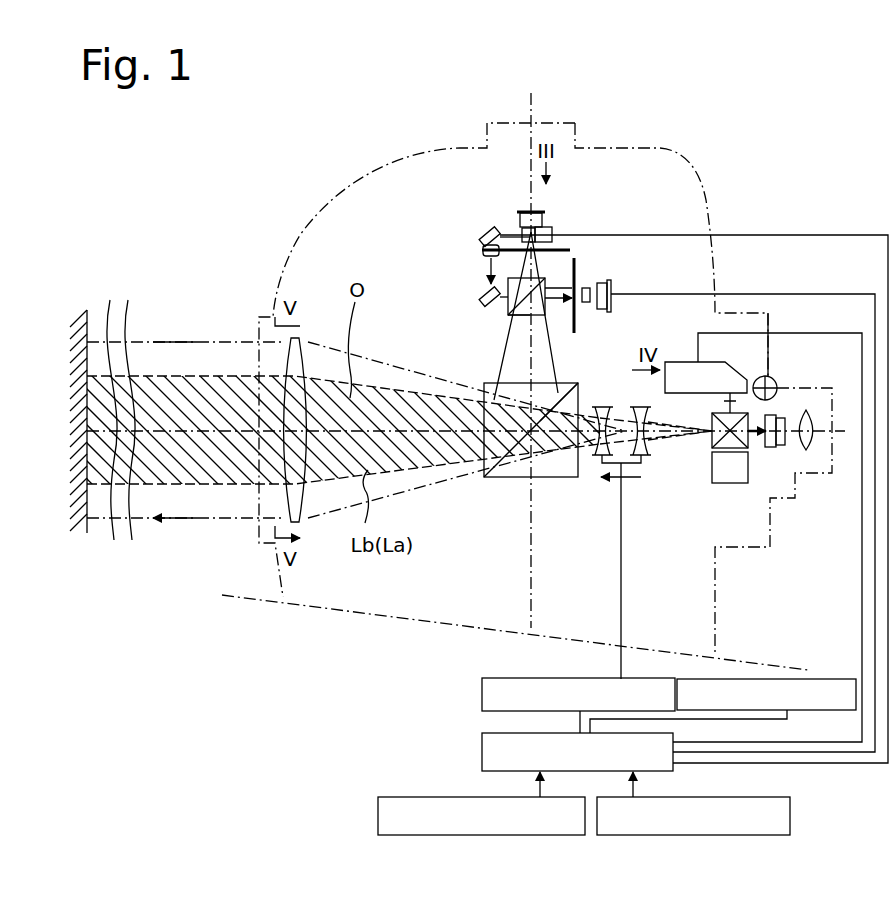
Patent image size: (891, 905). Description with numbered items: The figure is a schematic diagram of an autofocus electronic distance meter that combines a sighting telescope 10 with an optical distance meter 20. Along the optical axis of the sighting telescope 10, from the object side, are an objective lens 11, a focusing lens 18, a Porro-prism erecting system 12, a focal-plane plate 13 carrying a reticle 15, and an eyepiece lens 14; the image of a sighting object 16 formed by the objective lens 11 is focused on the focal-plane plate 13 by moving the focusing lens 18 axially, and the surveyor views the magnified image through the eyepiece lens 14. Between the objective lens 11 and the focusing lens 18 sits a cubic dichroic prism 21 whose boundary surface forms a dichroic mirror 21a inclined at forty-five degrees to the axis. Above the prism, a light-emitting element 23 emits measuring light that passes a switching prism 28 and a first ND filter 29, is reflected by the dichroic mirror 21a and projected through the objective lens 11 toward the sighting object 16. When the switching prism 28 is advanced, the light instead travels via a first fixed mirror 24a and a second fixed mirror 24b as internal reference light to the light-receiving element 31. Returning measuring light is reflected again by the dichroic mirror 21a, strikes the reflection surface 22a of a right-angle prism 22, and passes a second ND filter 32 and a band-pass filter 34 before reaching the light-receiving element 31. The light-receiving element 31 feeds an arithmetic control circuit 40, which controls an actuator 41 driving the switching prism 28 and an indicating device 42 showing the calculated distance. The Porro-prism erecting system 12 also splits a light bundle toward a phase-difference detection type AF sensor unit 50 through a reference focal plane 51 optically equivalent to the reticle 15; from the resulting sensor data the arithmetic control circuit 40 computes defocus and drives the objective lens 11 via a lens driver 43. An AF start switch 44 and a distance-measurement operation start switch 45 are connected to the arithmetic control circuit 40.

The sighting telescope 10 is at (290, 78).
The objective lens 11 is at (307, 340).
The Porro-prism erecting system 12 is at (765, 375).
The focal-plane plate 13 is at (776, 414).
The eyepiece lens 14 is at (806, 410).
The reticle 15 is at (768, 350).
The sighting object 16 is at (90, 312).
The focusing lens 18 is at (600, 406).
The optical distance meter 20 is at (636, 234).
The dichroic prism 21 is at (570, 470).
The dichroic mirror 21a is at (557, 393).
The right-angle prism 22 is at (508, 308).
The reflection surface 22a is at (520, 318).
The light-emitting element 23 is at (548, 214).
The first fixed mirror 24a is at (485, 233).
The second fixed mirror 24b is at (482, 297).
The switching prism 28 is at (523, 227).
The first ND filter 29 is at (572, 246).
The light-receiving element 31 is at (605, 284).
The second ND filter 32 is at (577, 312).
The band-pass filter 34 is at (587, 290).
The arithmetic control circuit 40 is at (482, 749).
The actuator 41 is at (553, 230).
The indicating device 42 is at (840, 678).
The lens driver 43 is at (482, 693).
The AF start switch 44 is at (790, 812).
The distance-measurement operation start switch 45 is at (378, 811).
The AF sensor unit 50 is at (682, 362).
The reference focal plane 51 is at (725, 406).